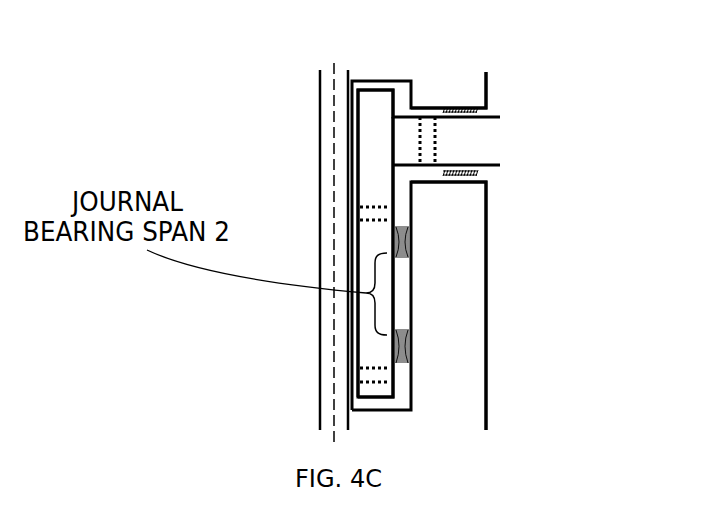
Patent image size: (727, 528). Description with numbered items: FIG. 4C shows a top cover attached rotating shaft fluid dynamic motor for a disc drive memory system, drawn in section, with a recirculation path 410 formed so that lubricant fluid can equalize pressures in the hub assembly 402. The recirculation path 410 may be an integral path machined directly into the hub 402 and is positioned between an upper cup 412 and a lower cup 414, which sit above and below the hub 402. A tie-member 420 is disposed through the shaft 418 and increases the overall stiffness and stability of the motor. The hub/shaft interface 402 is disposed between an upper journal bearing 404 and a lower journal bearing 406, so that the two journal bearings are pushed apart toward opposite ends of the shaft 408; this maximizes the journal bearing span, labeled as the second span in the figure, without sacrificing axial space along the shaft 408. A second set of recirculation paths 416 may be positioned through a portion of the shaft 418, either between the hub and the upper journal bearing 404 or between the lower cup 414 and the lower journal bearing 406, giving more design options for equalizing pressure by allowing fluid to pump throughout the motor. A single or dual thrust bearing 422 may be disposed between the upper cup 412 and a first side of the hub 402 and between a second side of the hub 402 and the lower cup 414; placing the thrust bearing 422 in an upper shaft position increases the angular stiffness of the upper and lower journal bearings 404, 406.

The hub assembly 402 is at (405, 140).
The upper journal bearing 404 is at (412, 245).
The lower journal bearing 406 is at (403, 363).
The shaft 408 is at (368, 348).
The recirculation path 410 is at (428, 147).
The upper cup 412 is at (442, 83).
The lower cup 414 is at (442, 320).
The second set of recirculation paths 416 is at (368, 217).
The shaft 418 is at (373, 185).
The tie-member 420 is at (333, 63).
The thrust bearing 422 is at (478, 109).